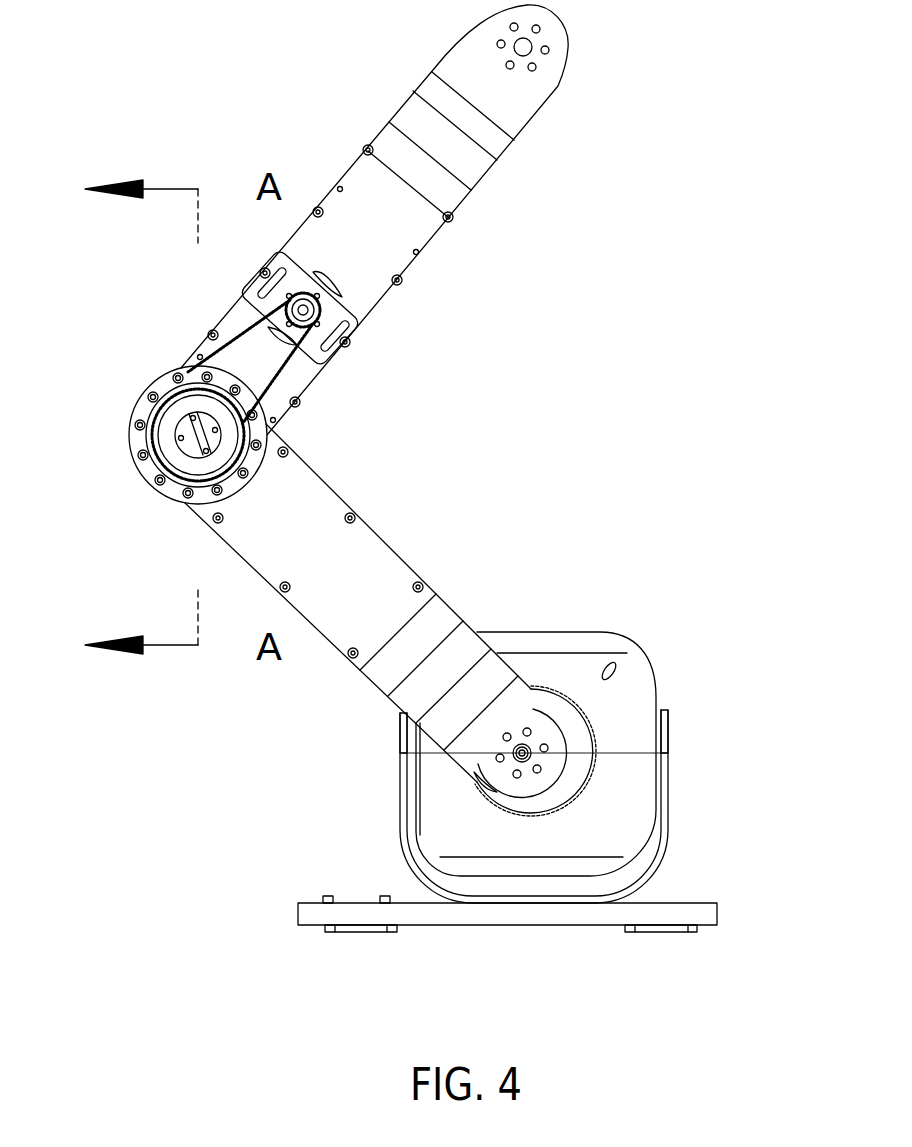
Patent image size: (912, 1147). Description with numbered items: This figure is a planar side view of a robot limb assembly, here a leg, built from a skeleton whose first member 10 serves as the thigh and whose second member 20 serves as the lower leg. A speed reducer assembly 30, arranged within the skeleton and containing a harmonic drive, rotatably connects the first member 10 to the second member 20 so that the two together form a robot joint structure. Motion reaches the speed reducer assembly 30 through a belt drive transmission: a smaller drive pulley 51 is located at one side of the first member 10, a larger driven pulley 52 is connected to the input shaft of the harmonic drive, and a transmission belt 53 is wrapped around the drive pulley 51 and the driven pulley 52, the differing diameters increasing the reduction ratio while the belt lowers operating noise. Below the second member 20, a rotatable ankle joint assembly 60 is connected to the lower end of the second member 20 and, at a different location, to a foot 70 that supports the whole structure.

The first member 10 is at (362, 272).
The second member 20 is at (357, 592).
The speed reducer assembly 30 is at (257, 440).
The drive pulley 51 is at (290, 303).
The driven pulley 52 is at (226, 350).
The transmission belt 53 is at (207, 422).
The ankle joint assembly 60 is at (612, 717).
The foot 70 is at (590, 915).